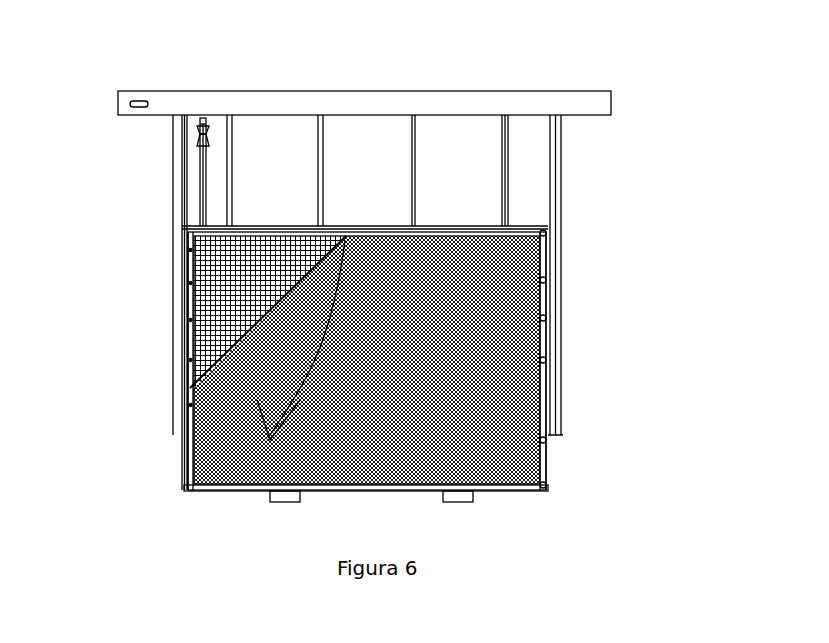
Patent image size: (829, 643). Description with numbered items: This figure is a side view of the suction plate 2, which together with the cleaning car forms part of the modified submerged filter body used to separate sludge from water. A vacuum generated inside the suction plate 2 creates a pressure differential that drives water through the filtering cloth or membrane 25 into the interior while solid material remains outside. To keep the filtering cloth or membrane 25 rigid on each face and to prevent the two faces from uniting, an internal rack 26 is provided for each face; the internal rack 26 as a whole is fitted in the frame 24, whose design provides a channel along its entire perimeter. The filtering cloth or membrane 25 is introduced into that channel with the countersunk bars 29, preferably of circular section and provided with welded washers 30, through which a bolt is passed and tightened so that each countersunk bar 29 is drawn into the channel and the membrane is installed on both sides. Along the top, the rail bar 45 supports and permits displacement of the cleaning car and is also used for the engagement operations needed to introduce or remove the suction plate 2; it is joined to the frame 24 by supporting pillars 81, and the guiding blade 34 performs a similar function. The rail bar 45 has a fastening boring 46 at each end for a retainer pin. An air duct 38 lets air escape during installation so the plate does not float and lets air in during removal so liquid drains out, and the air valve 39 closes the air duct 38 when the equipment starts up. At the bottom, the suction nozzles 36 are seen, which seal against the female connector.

The suction plate 2 is at (346, 360).
The frame 24 is at (457, 226).
The filtering cloth or membrane 25 is at (186, 405).
The internal rack 26 is at (200, 288).
The countersunk bar 29 is at (545, 378).
The welded washer 30 is at (545, 320).
The guiding blade 34 is at (180, 345).
The suction nozzle 36 is at (280, 497).
The air duct 38 is at (200, 197).
The air valve 39 is at (205, 137).
The rail bar 45 is at (483, 106).
The fastening boring 46 is at (138, 106).
The supporting pillar 81 is at (323, 163).